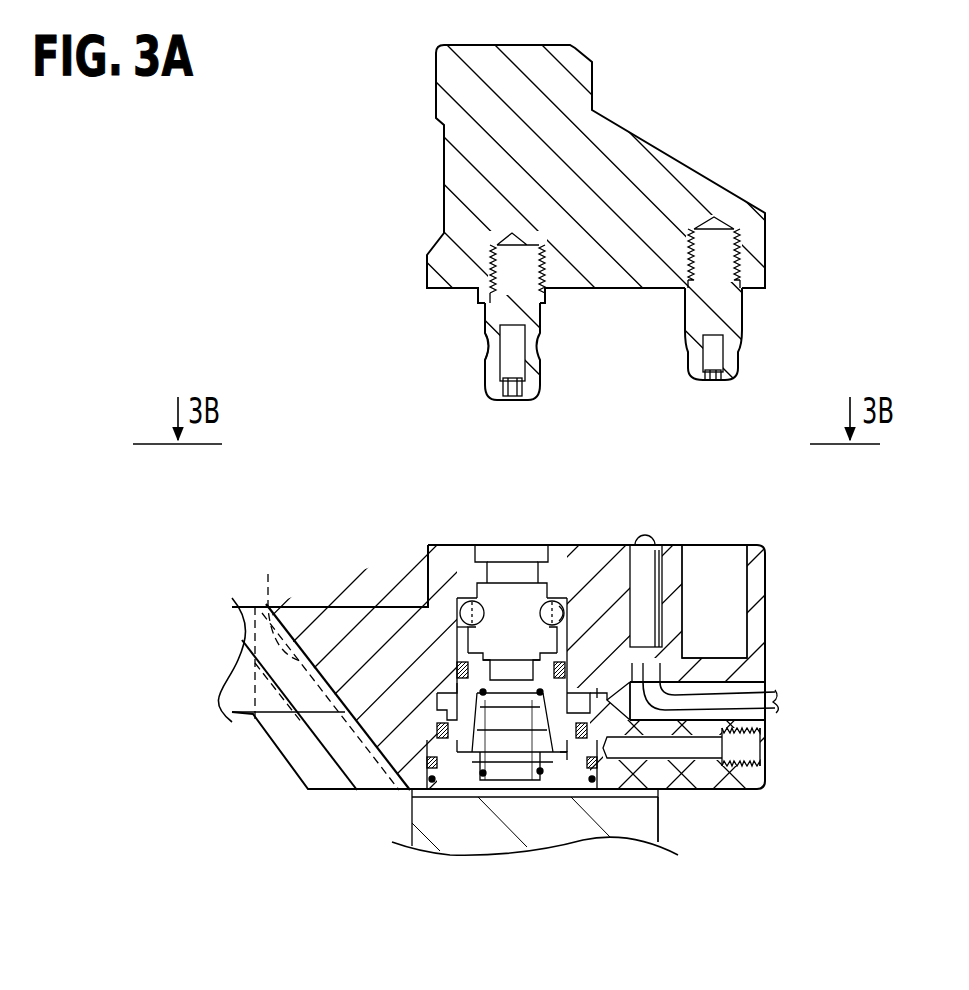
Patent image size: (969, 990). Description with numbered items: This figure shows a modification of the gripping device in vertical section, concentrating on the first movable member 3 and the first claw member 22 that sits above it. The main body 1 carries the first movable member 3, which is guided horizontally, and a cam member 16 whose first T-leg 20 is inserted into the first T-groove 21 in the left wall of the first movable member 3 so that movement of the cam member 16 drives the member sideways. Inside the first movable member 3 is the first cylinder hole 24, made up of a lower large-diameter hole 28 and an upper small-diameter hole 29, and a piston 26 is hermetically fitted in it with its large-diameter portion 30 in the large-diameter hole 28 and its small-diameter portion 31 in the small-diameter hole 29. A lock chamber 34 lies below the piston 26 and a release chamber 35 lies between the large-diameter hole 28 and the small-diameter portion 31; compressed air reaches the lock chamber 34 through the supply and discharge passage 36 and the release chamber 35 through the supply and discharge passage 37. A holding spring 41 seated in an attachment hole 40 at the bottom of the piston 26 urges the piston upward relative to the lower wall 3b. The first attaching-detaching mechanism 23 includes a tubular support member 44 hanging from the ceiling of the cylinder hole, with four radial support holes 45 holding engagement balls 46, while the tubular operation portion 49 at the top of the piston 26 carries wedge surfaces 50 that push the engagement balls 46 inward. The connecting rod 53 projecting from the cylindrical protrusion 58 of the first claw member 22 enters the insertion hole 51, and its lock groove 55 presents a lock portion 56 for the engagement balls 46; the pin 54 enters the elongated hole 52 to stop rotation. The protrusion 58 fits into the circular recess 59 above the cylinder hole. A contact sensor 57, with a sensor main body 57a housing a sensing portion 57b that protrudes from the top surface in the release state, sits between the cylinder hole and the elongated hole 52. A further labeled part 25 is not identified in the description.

The main body 1 is at (665, 833).
The first movable member 3 is at (323, 622).
The lower wall 3b is at (577, 798).
The cam member 16 is at (240, 670).
The first T-leg 20 is at (245, 605).
The first T-groove 21 is at (277, 628).
The first claw member 22 is at (445, 100).
The first attaching-detaching mechanism 23 is at (465, 583).
The first cylinder hole 24 is at (455, 626).
The diaphragm chamber 25 is at (564, 762).
The piston 26 is at (453, 688).
The large-diameter hole 28 is at (433, 784).
The small-diameter hole 29 is at (456, 668).
The large-diameter portion 30 is at (427, 740).
The small-diameter portion 31 is at (445, 704).
The lock chamber 34 is at (463, 700).
The release chamber 35 is at (435, 728).
The supply and discharge passage 36 is at (693, 750).
The supply and discharge passage 37 is at (675, 790).
The attachment hole 40 is at (480, 764).
The holding spring 41 is at (480, 776).
The tubular support member 44 is at (558, 619).
The support holes 45 is at (557, 605).
The engagement balls 46 is at (552, 601).
The tubular operation portion 49 is at (582, 670).
The wedge surface 50 is at (562, 647).
The insertion hole 51 is at (533, 573).
The elongated hole 52 is at (735, 609).
The connecting rod 53 is at (490, 320).
The pin 54 is at (737, 333).
The lock groove 55 is at (490, 348).
The lock portion 56 is at (490, 360).
The contact sensor 57 is at (641, 526).
The sensor main body 57a is at (683, 548).
The sensing portion 57b is at (650, 555).
The cylindrical protrusion 58 is at (476, 292).
The recess 59 is at (491, 545).